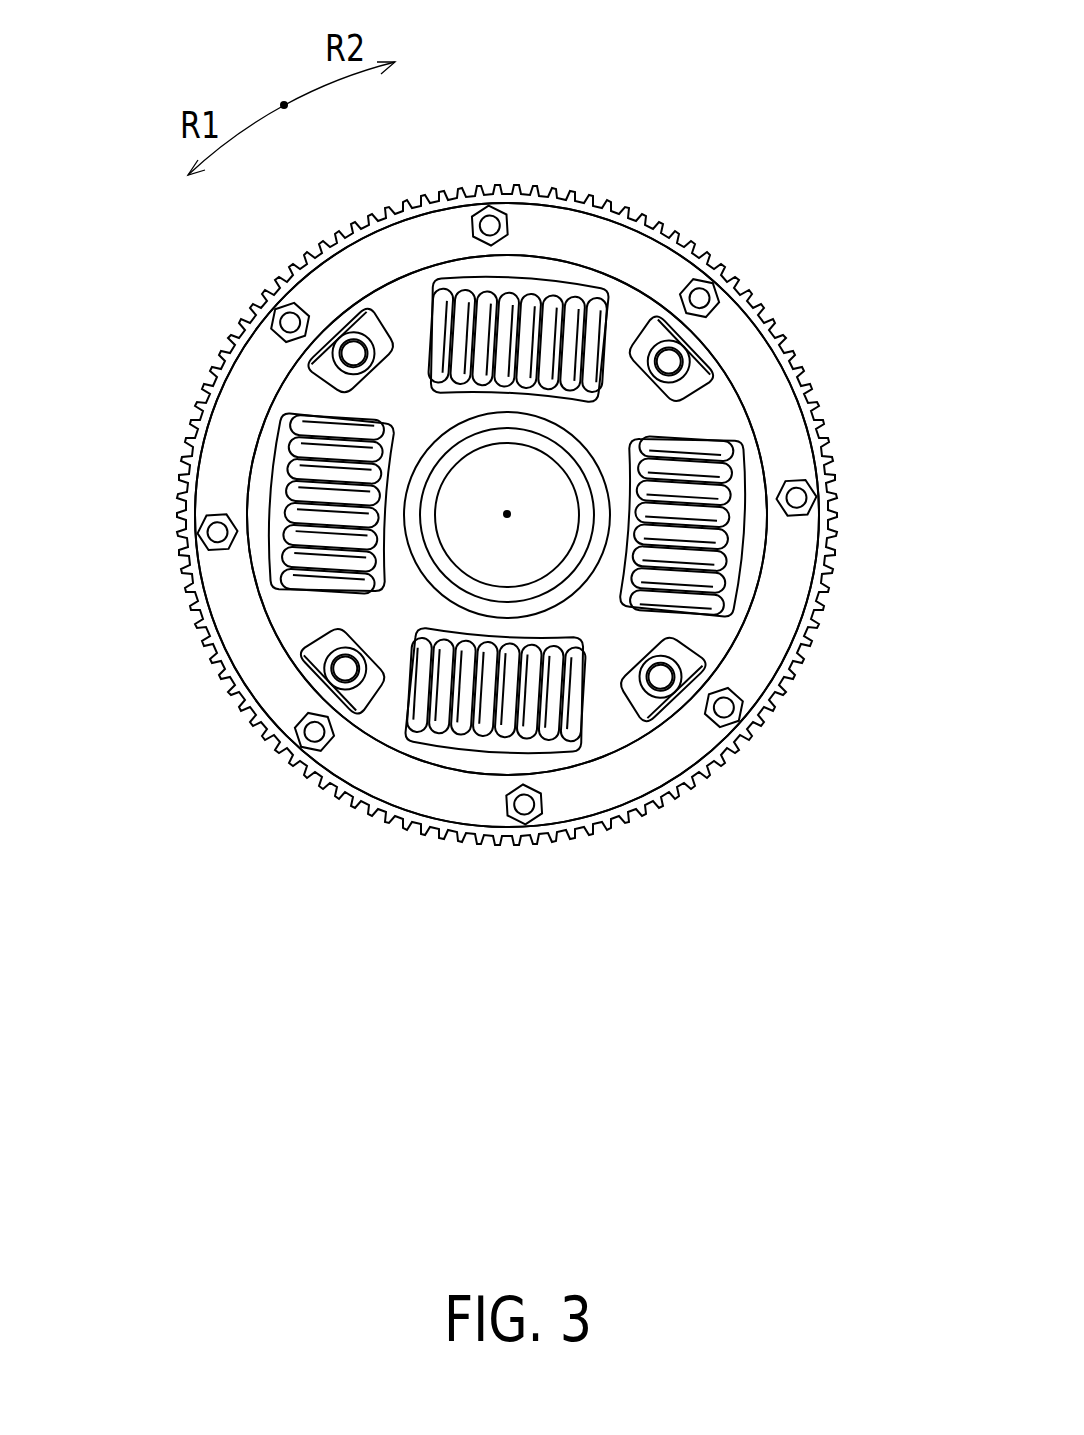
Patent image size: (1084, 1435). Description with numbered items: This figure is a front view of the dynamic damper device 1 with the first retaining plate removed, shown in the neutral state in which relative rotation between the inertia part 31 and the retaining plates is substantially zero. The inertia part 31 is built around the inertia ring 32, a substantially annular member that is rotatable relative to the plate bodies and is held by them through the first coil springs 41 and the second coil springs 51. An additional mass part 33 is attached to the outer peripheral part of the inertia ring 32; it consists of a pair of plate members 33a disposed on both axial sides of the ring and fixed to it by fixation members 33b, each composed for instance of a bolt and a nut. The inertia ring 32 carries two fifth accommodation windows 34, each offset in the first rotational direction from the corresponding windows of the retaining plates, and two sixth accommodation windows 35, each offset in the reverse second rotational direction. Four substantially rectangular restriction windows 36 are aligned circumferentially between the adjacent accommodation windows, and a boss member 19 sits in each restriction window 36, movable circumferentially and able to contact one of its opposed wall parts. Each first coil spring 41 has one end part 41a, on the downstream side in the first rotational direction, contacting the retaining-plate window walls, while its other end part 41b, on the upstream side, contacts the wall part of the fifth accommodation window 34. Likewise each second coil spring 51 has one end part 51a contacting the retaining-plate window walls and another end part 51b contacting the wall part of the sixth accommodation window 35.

The dynamic damper device 1 is at (660, 112).
The boss member 19 is at (303, 647).
The inertia part 31 is at (328, 808).
The inertia ring 32 is at (575, 802).
The additional mass part 33 is at (507, 616).
The plate member 33a is at (580, 823).
The fixation member 33b is at (525, 822).
The fifth accommodation window 34 is at (498, 518).
The sixth accommodation window 35 is at (531, 505).
The restriction window 36 is at (708, 352).
The first coil spring 41 is at (484, 518).
The one end part of first coil spring 41a is at (327, 581).
The other end part of first coil spring 41b is at (337, 428).
The second coil spring 51 is at (531, 518).
The one end part of second coil spring 51a is at (420, 684).
The other end part of second coil spring 51b is at (573, 694).